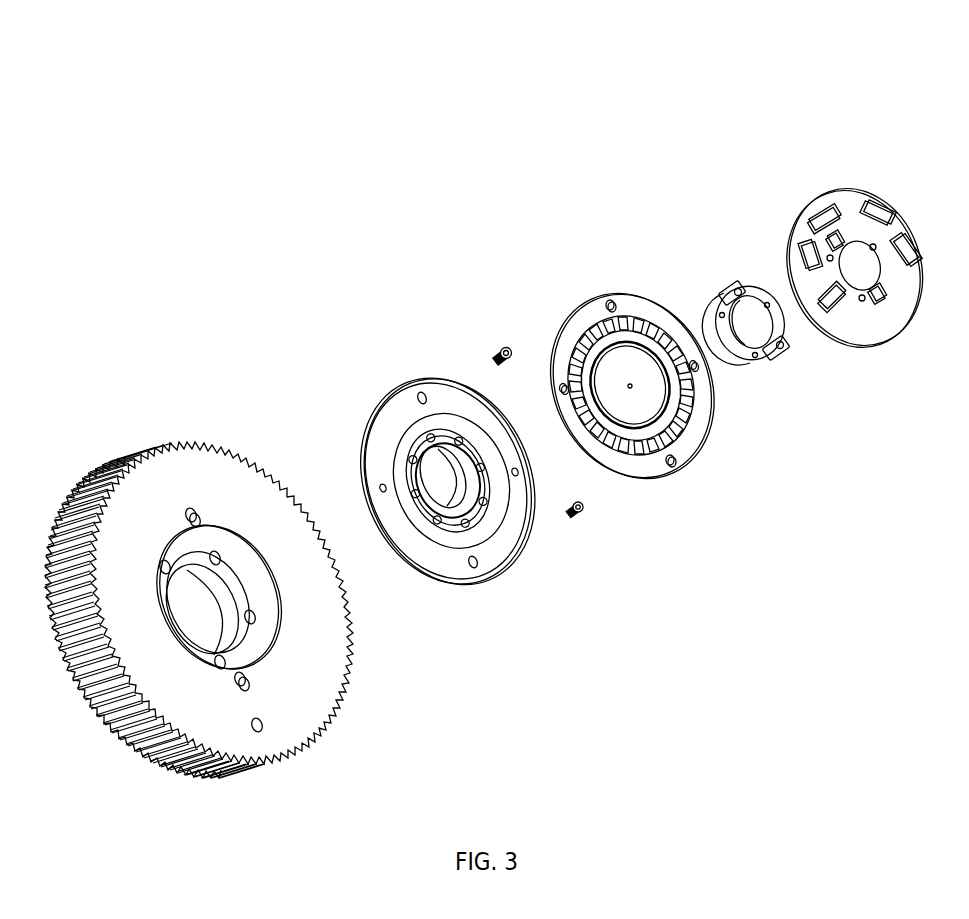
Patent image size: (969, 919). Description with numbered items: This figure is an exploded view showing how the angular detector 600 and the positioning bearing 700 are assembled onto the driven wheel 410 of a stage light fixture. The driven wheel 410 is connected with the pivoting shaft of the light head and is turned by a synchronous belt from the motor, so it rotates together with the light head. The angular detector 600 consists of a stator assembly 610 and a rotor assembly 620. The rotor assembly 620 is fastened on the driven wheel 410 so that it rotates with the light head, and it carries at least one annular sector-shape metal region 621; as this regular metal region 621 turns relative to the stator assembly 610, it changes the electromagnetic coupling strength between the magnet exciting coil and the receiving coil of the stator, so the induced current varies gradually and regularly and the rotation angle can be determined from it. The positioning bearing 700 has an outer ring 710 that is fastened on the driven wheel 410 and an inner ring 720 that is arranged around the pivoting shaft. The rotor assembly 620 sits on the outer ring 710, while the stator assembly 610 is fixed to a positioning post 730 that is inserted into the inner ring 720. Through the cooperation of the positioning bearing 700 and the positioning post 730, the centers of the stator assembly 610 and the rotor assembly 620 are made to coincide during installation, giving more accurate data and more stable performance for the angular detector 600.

The driven wheel 410 is at (187, 463).
The angular detector 600 is at (732, 256).
The stator assembly 610 is at (848, 203).
The rotor assembly 620 is at (566, 312).
The annular sector-shape metal region 621 is at (643, 320).
The positioning bearing 700 is at (482, 285).
The outer ring 710 is at (388, 380).
The inner ring 720 is at (455, 443).
The positioning post 730 is at (721, 300).